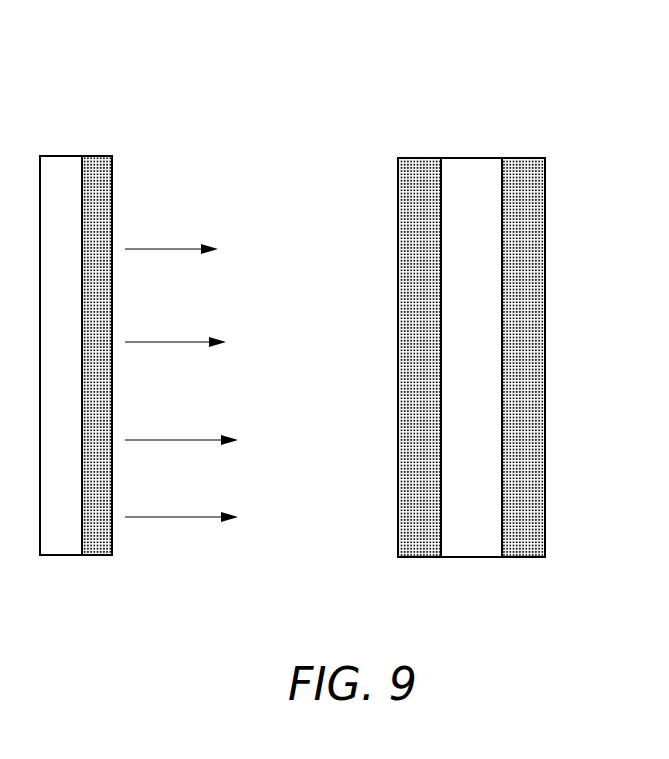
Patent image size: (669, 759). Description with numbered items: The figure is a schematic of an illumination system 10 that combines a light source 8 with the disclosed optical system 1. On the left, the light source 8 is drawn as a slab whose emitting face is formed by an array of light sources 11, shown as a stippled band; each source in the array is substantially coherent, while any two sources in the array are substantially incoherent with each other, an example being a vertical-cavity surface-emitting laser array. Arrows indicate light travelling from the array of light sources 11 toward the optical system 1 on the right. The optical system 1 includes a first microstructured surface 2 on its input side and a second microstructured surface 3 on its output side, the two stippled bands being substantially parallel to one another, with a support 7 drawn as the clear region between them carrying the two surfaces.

The illumination system 10 is at (243, 33).
The light source 8 is at (75, 112).
The array of light sources 11 is at (95, 532).
The optical system 1 is at (479, 111).
The first microstructured surface 2 is at (410, 207).
The second microstructured surface 3 is at (528, 207).
The support 7 is at (480, 535).